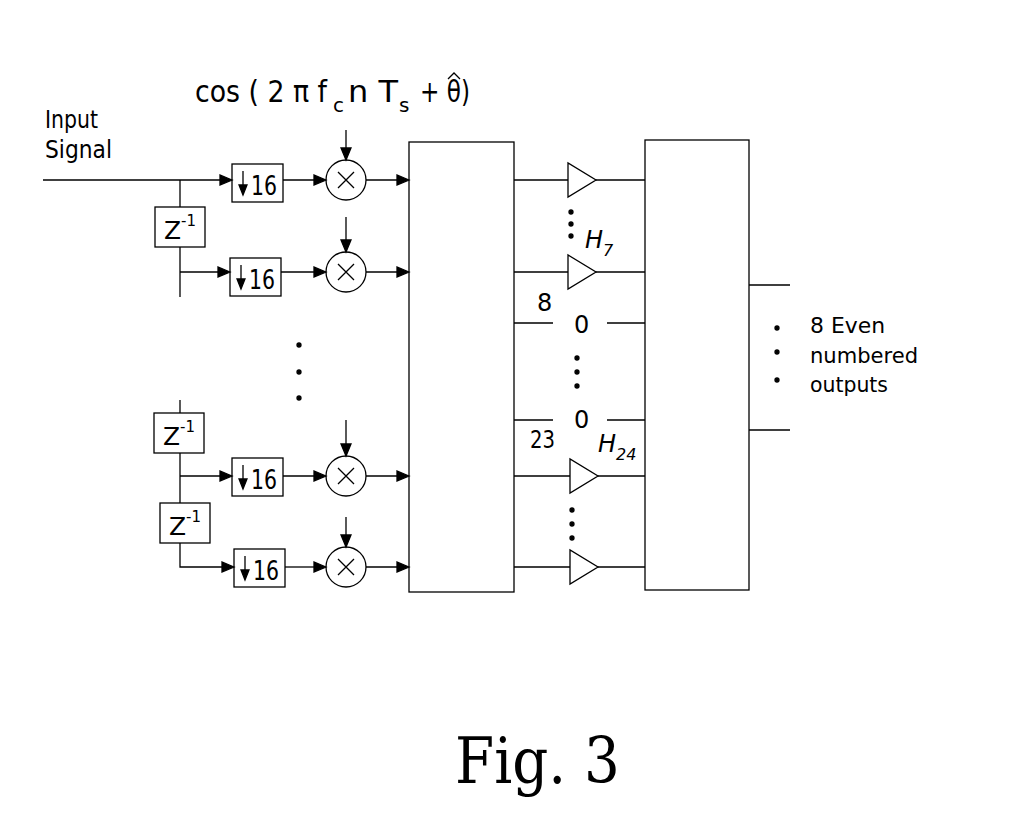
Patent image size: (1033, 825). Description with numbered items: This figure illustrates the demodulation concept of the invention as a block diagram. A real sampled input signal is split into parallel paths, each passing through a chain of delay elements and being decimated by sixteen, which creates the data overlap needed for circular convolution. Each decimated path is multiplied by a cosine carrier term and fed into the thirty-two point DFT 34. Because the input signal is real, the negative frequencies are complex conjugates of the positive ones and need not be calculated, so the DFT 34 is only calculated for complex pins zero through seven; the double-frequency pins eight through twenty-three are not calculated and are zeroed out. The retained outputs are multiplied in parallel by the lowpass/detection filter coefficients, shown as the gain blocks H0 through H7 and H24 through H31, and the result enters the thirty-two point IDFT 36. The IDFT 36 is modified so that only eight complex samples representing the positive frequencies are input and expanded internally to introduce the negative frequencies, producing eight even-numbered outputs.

The 32 point DFT 34 is at (478, 142).
The 32 point IDFT 36 is at (697, 139).